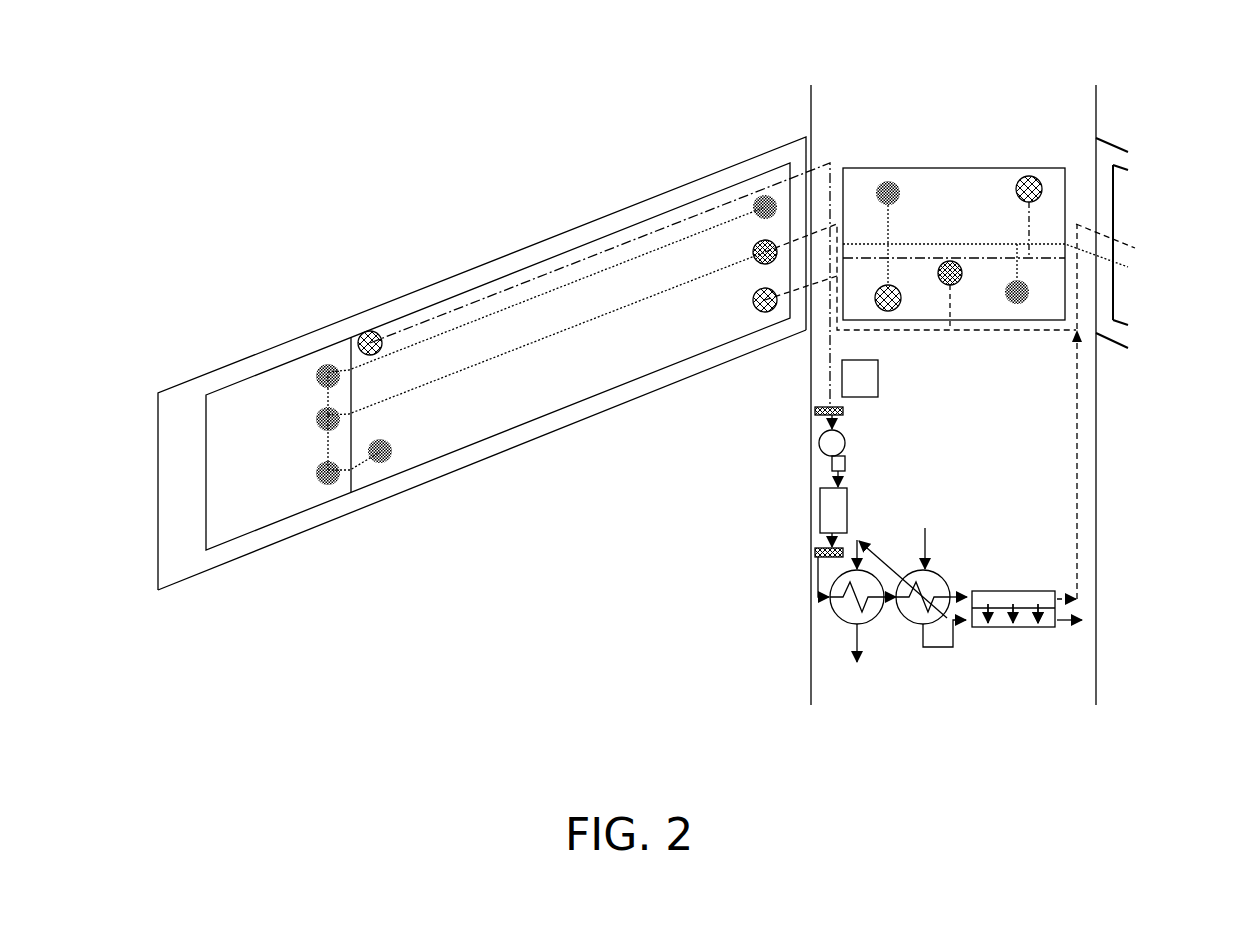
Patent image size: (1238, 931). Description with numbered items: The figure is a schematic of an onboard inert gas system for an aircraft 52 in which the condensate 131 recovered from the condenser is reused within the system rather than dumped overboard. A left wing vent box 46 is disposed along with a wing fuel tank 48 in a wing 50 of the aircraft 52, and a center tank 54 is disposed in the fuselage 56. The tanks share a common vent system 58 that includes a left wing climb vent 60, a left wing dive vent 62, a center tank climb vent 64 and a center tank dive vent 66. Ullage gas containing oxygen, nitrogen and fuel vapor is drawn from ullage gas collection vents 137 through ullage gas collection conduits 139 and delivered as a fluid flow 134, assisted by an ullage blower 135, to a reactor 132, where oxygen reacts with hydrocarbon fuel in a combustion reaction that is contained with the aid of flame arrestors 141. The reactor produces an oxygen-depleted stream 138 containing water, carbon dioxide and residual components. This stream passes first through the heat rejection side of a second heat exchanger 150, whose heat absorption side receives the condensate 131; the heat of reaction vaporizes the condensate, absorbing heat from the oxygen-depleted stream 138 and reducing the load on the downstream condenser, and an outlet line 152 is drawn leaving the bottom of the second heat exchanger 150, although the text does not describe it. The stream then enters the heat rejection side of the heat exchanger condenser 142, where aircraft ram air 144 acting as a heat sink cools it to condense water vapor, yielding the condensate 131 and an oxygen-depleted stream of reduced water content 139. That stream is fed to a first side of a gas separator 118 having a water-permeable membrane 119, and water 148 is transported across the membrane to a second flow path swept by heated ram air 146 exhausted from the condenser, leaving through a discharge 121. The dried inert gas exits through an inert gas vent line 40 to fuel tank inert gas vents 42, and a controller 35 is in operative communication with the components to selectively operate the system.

The controller 35 is at (880, 378).
The inert gas vent line 40 is at (1078, 388).
The fuel tank inert gas vent 42 is at (750, 249).
The left wing vent box 46 is at (205, 407).
The wing fuel tank 48 is at (457, 290).
The wing 50 is at (459, 475).
The aircraft 52 is at (267, 122).
The center tank 54 is at (927, 168).
The fuselage 56 is at (810, 540).
The common vent system 58 is at (680, 300).
The left wing climb vent 60 is at (757, 198).
The left wing dive vent 62 is at (382, 466).
The center tank climb vent 64 is at (878, 180).
The center tank dive vent 66 is at (1017, 303).
The gas separator 118 is at (1010, 591).
The water-permeable membrane 119 is at (1028, 612).
The discharge 121 is at (1067, 622).
The condensate 131 is at (857, 538).
The reactor 132 is at (820, 515).
The fluid flow 134 is at (832, 473).
The ullage blower 135 is at (819, 443).
The ullage gas collection vent 137 is at (370, 330).
The oxygen-depleted stream 138 is at (813, 568).
The ullage gas collection conduit 139 is at (523, 283).
The flame arrestor 141 is at (812, 411).
The heat exchanger condenser 142 is at (868, 538).
The aircraft ram air 144 is at (922, 553).
The heated ram air 146 is at (940, 648).
The water 148 is at (1013, 605).
The second heat exchanger 150 is at (828, 599).
The drain line 152 is at (852, 637).